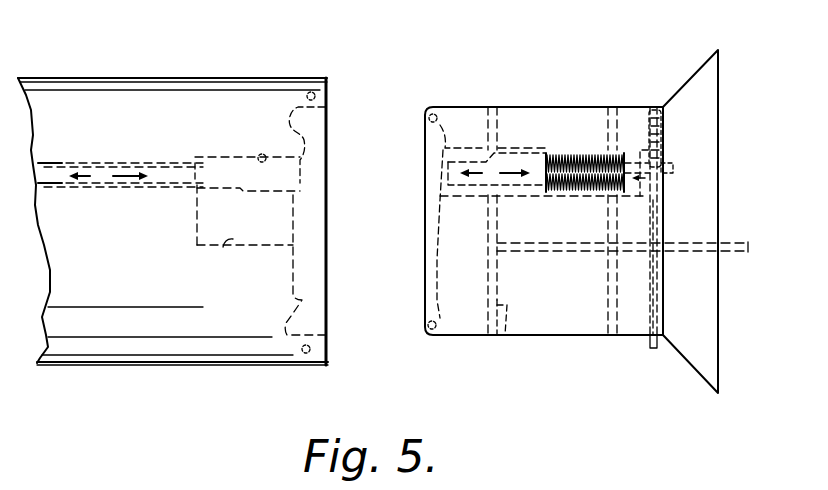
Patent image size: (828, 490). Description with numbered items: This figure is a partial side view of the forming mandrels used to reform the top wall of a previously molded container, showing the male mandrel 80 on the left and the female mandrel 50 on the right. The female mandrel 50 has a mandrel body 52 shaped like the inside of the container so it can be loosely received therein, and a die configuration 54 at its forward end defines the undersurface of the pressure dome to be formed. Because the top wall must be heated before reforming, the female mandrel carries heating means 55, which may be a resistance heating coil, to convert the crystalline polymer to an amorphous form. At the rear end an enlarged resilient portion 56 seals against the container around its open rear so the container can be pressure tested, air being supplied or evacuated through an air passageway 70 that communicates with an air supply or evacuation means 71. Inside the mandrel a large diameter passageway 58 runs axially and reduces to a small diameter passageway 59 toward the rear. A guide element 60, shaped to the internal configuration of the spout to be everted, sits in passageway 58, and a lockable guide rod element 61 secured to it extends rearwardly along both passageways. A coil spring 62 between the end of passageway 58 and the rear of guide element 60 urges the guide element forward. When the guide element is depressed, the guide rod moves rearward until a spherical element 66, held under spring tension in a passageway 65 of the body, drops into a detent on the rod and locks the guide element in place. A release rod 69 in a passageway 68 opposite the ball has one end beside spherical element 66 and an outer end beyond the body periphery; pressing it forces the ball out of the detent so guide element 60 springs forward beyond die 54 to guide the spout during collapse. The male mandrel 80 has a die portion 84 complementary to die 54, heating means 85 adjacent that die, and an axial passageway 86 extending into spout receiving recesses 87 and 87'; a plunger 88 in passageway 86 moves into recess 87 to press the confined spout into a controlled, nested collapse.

The female mandrel 50 is at (548, 80).
The mandrel body 52 is at (548, 107).
The die configuration 54 is at (425, 287).
The heating means 55 is at (450, 97).
The enlarged resilient portion 56 is at (688, 92).
The large diameter passageway 58 is at (473, 140).
The small diameter passageway 59 is at (640, 187).
The guide element 60 is at (503, 190).
The lockable guide rod element 61 is at (673, 168).
The coil spring 62 is at (556, 203).
The passageway 65 is at (663, 136).
The spherical element 66 is at (663, 163).
The passageway 68 is at (648, 318).
The release rod 69 is at (652, 348).
The air passageway 70 is at (506, 340).
The air supply or evacuation means 71 is at (734, 246).
The male mandrel 80 is at (140, 62).
The die portion 84 is at (326, 243).
The heating means 85 is at (313, 92).
The passageway 86 is at (63, 166).
The spout receiving recess 87 is at (253, 140).
The spout receiving recess 87' is at (262, 269).
The plunger 88 is at (52, 198).